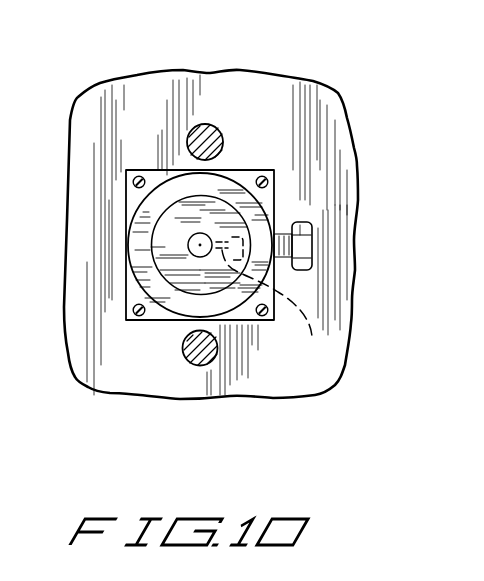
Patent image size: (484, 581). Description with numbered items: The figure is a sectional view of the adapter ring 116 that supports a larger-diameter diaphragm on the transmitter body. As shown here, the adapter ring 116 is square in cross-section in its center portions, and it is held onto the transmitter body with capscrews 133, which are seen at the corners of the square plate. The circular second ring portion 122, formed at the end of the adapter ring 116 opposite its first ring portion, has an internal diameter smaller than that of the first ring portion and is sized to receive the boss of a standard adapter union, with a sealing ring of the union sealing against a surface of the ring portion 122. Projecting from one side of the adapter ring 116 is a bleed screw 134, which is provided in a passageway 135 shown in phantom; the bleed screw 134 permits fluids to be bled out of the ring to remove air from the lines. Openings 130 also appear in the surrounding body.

The adapter ring 116 is at (252, 172).
The second ring portion 122 is at (182, 302).
The panel holes 130 is at (210, 138).
The capscrews 133 is at (140, 177).
The bleed screw 134 is at (307, 223).
The passageway 135 is at (276, 301).